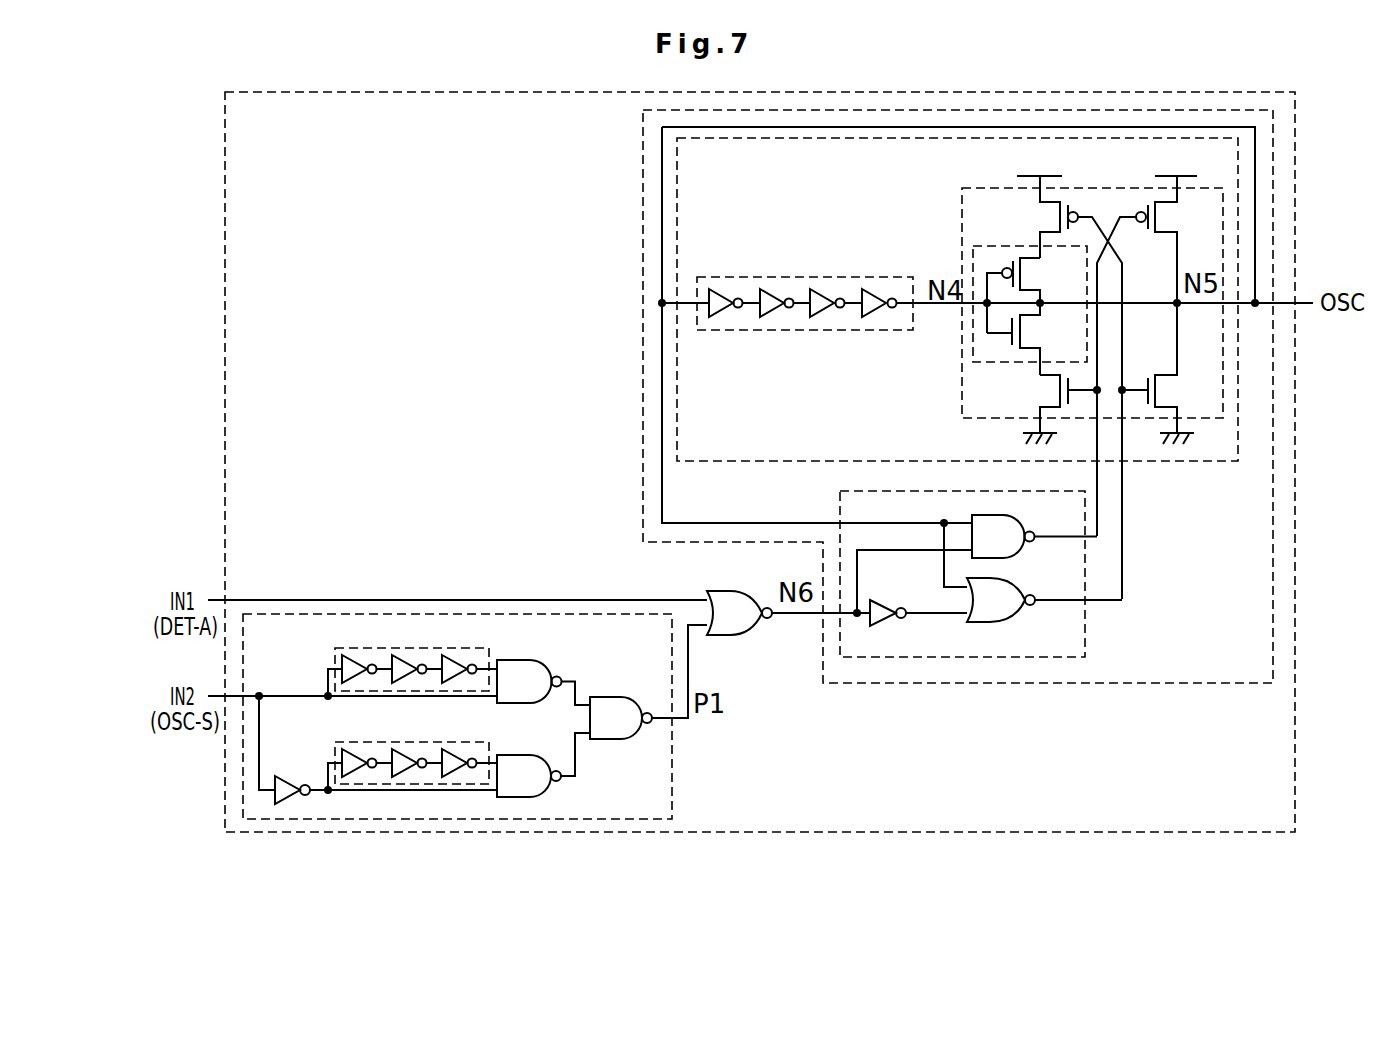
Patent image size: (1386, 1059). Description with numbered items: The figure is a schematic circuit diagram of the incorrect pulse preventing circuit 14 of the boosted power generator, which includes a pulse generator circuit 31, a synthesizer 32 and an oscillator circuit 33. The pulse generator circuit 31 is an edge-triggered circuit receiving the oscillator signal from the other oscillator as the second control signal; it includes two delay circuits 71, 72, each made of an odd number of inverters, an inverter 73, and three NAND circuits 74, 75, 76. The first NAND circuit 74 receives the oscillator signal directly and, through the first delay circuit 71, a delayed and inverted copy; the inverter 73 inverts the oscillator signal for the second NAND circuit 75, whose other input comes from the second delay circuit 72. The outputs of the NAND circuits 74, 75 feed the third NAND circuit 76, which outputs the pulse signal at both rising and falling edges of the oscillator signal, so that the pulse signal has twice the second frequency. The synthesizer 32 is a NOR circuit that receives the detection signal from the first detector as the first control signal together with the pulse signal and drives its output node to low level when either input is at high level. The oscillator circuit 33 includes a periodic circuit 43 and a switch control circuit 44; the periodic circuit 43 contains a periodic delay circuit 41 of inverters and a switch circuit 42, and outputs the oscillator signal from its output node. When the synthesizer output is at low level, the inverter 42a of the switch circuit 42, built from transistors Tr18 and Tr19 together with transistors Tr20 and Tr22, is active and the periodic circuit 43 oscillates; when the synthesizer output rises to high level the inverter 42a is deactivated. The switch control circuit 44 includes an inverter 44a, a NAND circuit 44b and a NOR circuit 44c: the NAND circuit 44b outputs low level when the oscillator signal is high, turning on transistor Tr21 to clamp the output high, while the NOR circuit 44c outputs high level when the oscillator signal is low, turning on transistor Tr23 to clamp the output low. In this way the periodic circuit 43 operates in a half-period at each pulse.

The incorrect pulse preventing circuit 14 is at (1297, 700).
The pulse generator circuit 31 is at (672, 778).
The synthesizer 32 is at (750, 636).
The oscillator circuit 33 is at (1163, 687).
The periodic delay circuit 41 is at (805, 302).
The switch circuit 42 is at (1080, 186).
The inverter 42a is at (963, 350).
The periodic circuit 43 is at (1190, 462).
The switch control circuit 44 is at (1008, 658).
The inverter 44a is at (891, 600).
The NAND circuit 44b is at (1020, 552).
The NOR circuit 44c is at (1020, 615).
The first delay circuit 71 is at (342, 650).
The second delay circuit 72 is at (355, 742).
The inverter 73 is at (292, 785).
The first NAND circuit 74 is at (545, 662).
The second NAND circuit 75 is at (545, 798).
The third NAND circuit 76 is at (620, 740).
The transistor Tr18 is at (1030, 250).
The transistor Tr19 is at (1032, 350).
The transistor Tr20 is at (1047, 240).
The transistor Tr21 is at (1150, 240).
The transistor Tr22 is at (1063, 345).
The transistor Tr23 is at (1165, 372).